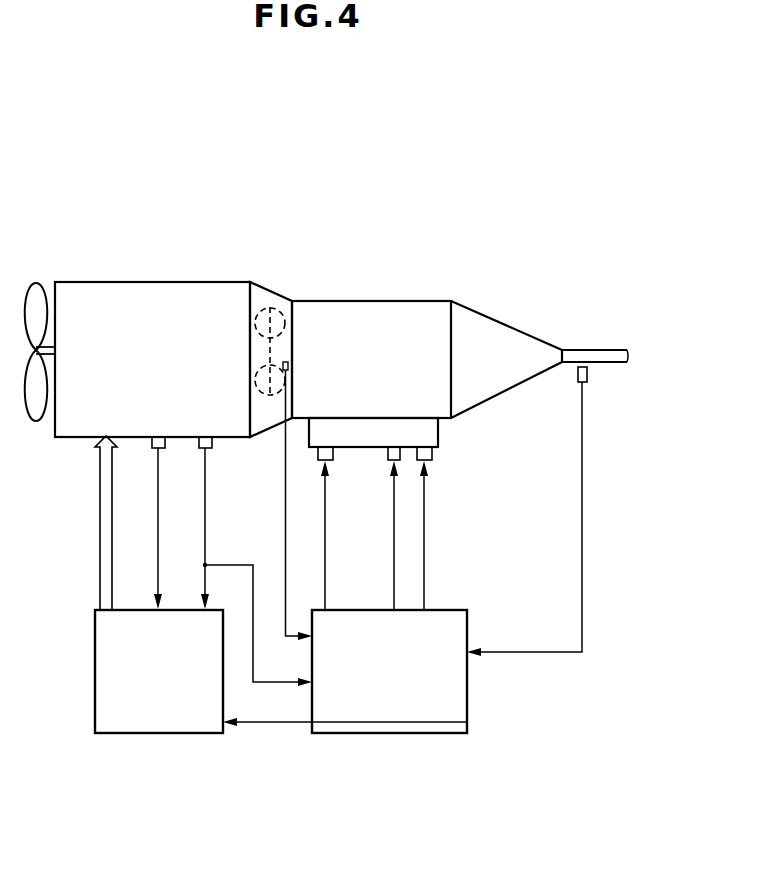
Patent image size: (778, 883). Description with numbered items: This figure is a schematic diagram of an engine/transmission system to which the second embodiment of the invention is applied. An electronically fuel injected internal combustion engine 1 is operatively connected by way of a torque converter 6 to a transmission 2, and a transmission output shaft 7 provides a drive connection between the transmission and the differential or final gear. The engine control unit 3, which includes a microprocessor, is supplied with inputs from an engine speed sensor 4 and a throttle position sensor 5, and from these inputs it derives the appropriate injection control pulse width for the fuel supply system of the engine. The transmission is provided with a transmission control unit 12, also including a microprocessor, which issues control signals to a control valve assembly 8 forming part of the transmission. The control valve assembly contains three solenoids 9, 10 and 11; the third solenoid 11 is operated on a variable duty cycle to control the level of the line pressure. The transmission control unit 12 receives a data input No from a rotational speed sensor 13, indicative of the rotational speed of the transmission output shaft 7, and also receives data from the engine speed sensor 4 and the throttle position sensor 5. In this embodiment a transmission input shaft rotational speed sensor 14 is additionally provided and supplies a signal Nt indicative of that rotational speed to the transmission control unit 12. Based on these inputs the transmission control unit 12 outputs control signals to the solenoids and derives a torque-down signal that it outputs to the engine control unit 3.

The internal combustion engine 1 is at (137, 359).
The transmission 2 is at (250, 349).
The engine control unit 3 is at (157, 733).
The engine speed sensor 4 is at (165, 447).
The throttle position sensor 5 is at (212, 447).
The torque converter 6 is at (281, 313).
The transmission output shaft 7 is at (578, 350).
The control valve assembly 8 is at (438, 432).
The solenoid 9 is at (400, 455).
The solenoid 10 is at (432, 457).
The third solenoid 11 is at (333, 455).
The transmission control unit 12 is at (388, 733).
The rotational speed sensor 13 is at (587, 375).
The transmission input shaft rotational speed sensor 14 is at (288, 368).